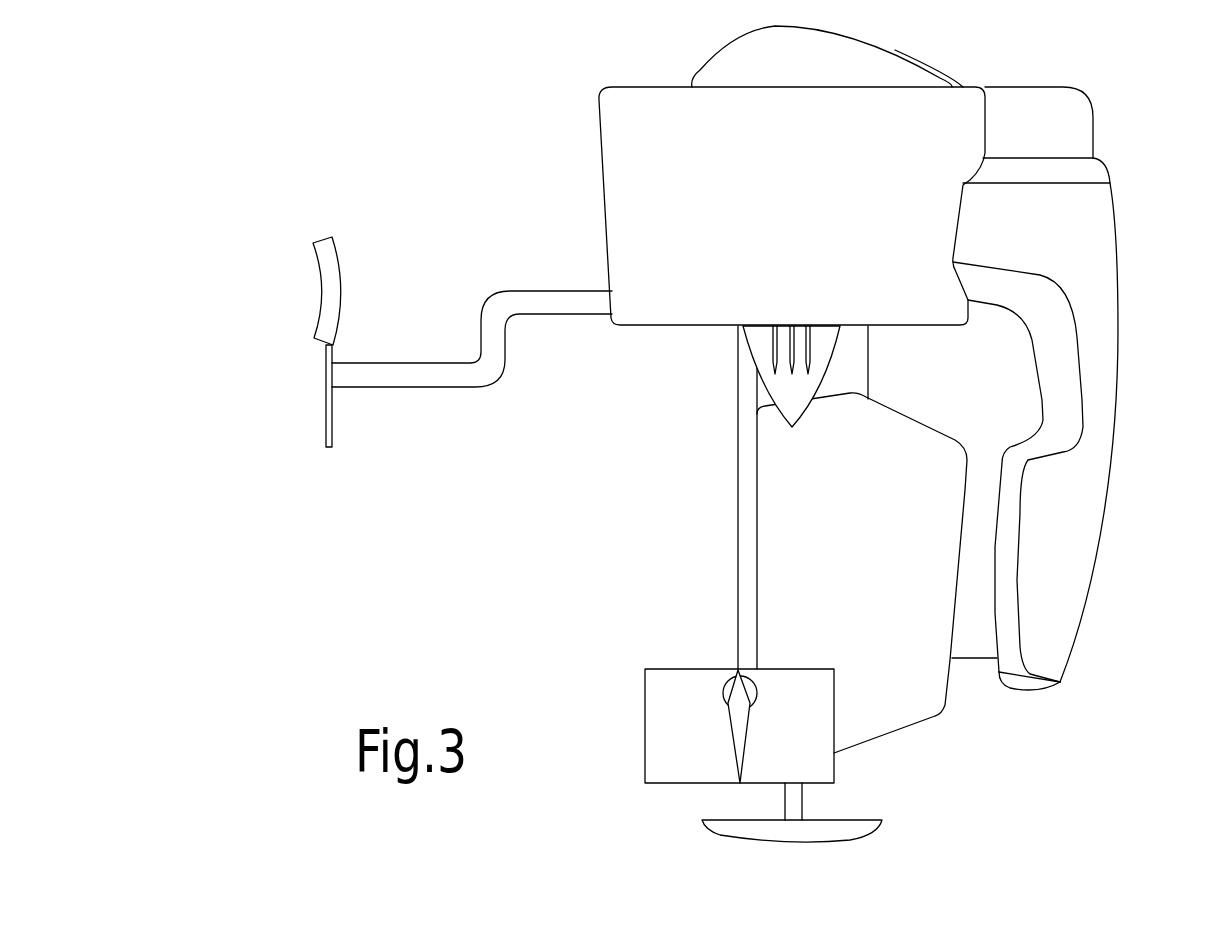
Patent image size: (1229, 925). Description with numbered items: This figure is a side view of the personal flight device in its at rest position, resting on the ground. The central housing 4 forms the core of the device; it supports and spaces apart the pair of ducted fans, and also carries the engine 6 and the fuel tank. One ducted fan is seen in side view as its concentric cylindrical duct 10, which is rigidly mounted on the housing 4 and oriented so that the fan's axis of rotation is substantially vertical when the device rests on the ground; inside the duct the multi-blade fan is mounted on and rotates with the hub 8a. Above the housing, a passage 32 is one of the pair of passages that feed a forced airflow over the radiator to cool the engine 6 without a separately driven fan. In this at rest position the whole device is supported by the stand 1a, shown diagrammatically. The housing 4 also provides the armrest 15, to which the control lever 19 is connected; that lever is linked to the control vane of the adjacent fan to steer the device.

The cylindrical duct 10 is at (823, 207).
The passage 32 is at (888, 49).
The engine 6 is at (1100, 233).
The central housing 4 is at (722, 526).
The hub 8a is at (760, 393).
The stand 1a is at (900, 818).
The armrest 15 is at (418, 405).
The control lever 19 is at (312, 289).